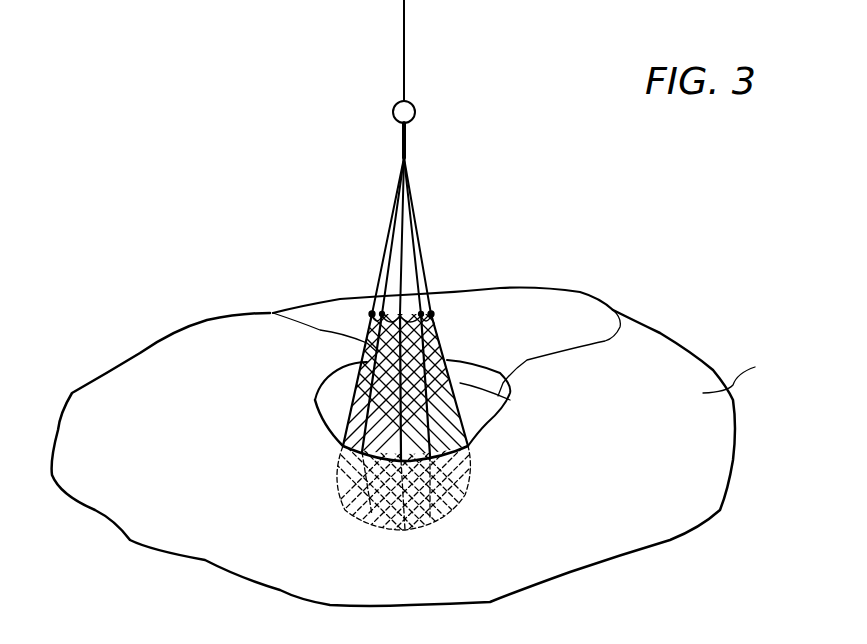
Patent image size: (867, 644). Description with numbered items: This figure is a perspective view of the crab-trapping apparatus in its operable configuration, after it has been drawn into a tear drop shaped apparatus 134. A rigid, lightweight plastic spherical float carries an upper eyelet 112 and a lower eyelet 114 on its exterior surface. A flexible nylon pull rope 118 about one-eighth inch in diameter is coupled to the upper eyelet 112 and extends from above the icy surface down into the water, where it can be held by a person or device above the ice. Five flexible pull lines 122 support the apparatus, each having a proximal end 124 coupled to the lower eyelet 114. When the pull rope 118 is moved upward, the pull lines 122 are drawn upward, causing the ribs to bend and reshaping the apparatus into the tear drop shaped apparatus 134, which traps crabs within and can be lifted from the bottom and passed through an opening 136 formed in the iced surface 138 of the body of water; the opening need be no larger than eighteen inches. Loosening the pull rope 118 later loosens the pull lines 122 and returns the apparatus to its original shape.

The upper eyelet 112 is at (393, 100).
The lower eyelet 114 is at (400, 142).
The pull rope 118 is at (404, 33).
The pull lines 122 is at (418, 274).
The proximal end 124 is at (403, 157).
The tear drop shaped apparatus 134 is at (273, 313).
The opening 136 is at (613, 310).
The iced surface 138 is at (753, 375).